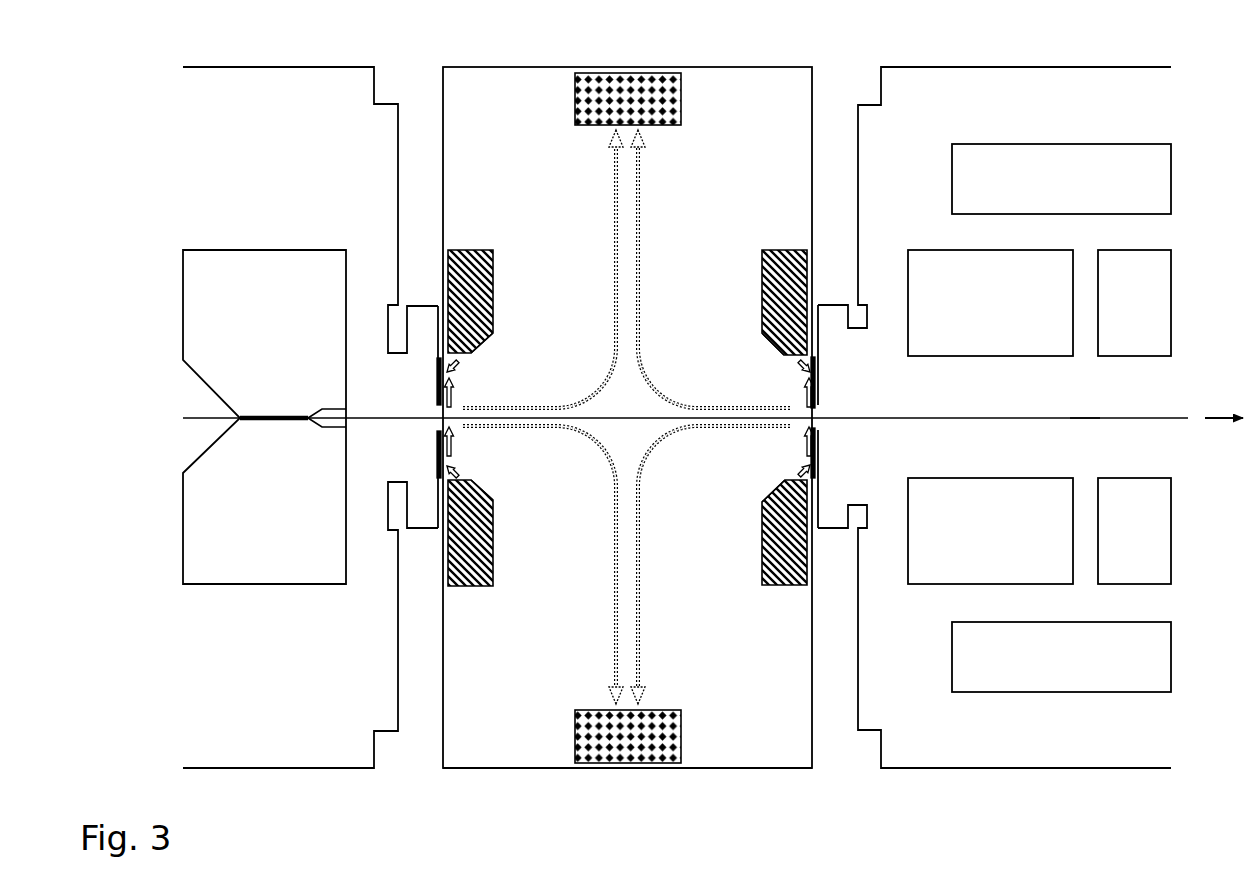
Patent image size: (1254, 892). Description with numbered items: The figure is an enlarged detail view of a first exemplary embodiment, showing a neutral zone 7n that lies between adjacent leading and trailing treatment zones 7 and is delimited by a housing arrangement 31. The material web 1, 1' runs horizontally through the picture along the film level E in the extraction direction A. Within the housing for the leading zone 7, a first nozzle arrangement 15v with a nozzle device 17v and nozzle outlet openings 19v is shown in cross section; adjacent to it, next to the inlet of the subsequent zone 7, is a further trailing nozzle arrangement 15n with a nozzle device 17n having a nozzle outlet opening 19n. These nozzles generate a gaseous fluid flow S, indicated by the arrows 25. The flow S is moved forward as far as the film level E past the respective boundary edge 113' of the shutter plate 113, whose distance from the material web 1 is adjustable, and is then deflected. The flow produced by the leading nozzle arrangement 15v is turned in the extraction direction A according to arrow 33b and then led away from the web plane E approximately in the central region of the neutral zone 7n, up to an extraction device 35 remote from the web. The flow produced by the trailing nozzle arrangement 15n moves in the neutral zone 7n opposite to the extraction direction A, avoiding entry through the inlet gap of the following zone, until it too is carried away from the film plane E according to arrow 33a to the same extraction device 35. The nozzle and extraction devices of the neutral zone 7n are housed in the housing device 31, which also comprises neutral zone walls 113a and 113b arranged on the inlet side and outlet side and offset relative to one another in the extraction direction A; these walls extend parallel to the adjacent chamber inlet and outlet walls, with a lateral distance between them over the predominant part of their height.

The material web 1 is at (698, 461).
The material web 1' is at (698, 461).
The treatment zone 7 is at (306, 784).
The neutral zone 7n is at (538, 784).
The first nozzle arrangement 15v is at (506, 416).
The nozzle device 17v is at (475, 585).
The trailing nozzle arrangement 15n is at (748, 408).
The nozzle device 17n is at (773, 587).
The nozzle outlet openings 19v is at (471, 363).
The nozzle outlet opening 19n is at (790, 358).
The gaseous fluid flow S is at (805, 390).
The arrows 25 is at (628, 425).
The housing arrangement 31 is at (482, 770).
The arrow 33a is at (640, 243).
The arrow 33b is at (614, 268).
The extraction device 35 is at (628, 86).
The shutter plate 113 is at (623, 418).
The neutral zone wall 113a is at (832, 382).
The neutral zone wall 113b is at (428, 383).
The boundary edge 113' is at (602, 416).
The film level E is at (1084, 418).
The extraction direction A is at (1213, 418).